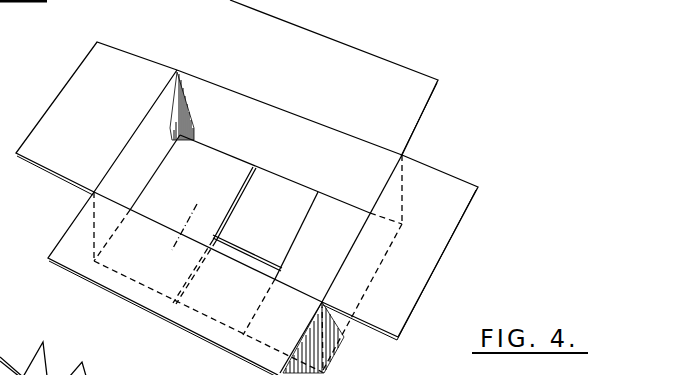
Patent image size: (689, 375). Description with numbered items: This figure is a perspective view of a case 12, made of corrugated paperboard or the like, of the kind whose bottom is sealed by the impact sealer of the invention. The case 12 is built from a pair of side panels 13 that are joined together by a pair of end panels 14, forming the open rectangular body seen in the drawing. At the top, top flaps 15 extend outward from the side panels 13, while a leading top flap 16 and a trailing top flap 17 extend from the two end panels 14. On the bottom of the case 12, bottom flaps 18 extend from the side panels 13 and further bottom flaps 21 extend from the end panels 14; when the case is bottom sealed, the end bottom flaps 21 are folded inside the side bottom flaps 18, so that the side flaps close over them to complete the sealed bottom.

The case 12 is at (436, 143).
The side panels 13 is at (247, 148).
The end panels 14 is at (141, 162).
The top flaps 15 is at (396, 74).
The leading top flap 16 is at (436, 258).
The trailing top flap 17 is at (64, 97).
The bottom flaps 18 is at (268, 256).
The bottom flaps 21 is at (315, 213).